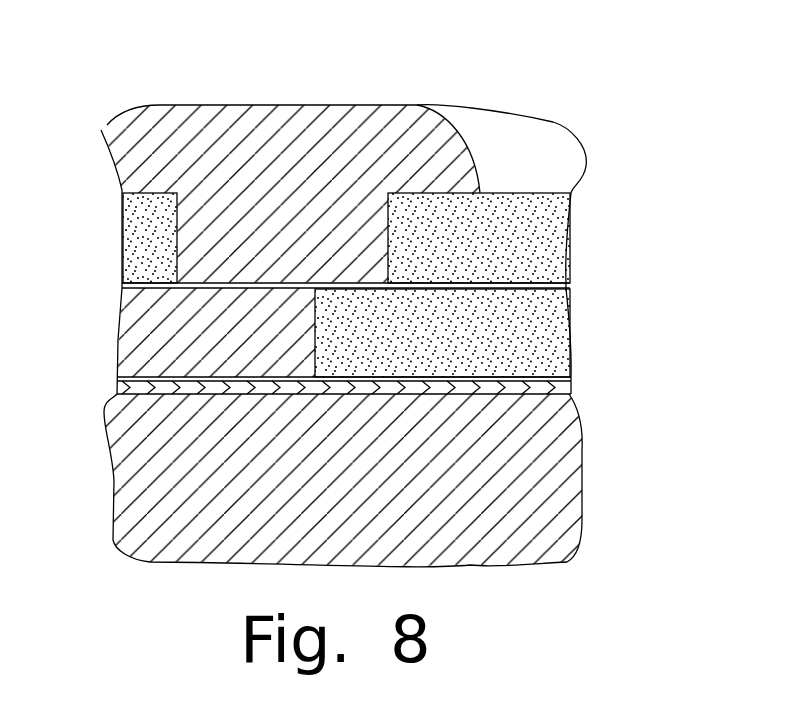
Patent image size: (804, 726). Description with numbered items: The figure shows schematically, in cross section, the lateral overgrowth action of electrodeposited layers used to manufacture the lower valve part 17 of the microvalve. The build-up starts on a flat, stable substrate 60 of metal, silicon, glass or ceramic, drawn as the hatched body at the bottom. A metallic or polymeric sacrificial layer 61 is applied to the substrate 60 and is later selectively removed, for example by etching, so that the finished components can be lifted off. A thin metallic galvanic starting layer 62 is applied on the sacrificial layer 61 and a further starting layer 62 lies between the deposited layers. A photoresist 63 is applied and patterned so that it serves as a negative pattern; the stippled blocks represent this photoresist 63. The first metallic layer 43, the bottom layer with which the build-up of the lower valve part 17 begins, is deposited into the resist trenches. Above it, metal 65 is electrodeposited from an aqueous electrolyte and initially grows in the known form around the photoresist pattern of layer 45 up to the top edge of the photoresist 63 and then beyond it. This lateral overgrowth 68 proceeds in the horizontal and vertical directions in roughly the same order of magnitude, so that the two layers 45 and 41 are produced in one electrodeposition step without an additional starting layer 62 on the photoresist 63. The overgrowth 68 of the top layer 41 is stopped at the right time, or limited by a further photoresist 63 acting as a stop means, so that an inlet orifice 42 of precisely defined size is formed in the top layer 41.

The lower valve part 17 is at (582, 267).
The top layer 41 is at (203, 140).
The inlet orifice 42 is at (553, 140).
The metallic layer 43 is at (153, 338).
The layer 45 is at (227, 250).
The substrate 60 is at (162, 480).
The sacrificial layer 61 is at (207, 385).
The galvanic starting layer 62 is at (520, 284).
The photoresist 63 is at (530, 237).
The metal 65 is at (220, 232).
The lateral overgrowth 68 is at (428, 150).